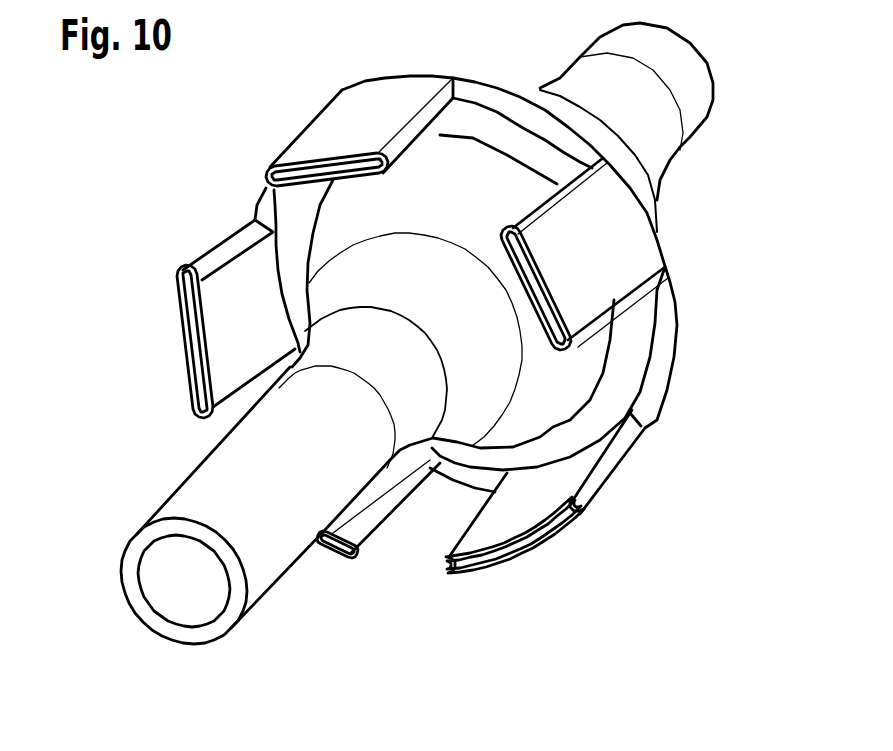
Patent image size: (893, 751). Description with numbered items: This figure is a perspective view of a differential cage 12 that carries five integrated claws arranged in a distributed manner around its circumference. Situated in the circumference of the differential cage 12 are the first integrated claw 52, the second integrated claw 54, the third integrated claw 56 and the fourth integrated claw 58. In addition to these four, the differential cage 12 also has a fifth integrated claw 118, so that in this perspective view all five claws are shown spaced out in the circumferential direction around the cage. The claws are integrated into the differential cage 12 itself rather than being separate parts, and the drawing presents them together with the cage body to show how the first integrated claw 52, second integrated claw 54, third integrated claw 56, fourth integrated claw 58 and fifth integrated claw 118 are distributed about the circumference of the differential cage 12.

The differential cage 12 is at (570, 375).
The first integrated claw 52 is at (345, 103).
The second integrated claw 54 is at (630, 253).
The third integrated claw 56 is at (523, 548).
The fourth integrated claw 58 is at (334, 545).
The fifth integrated claw 118 is at (188, 340).